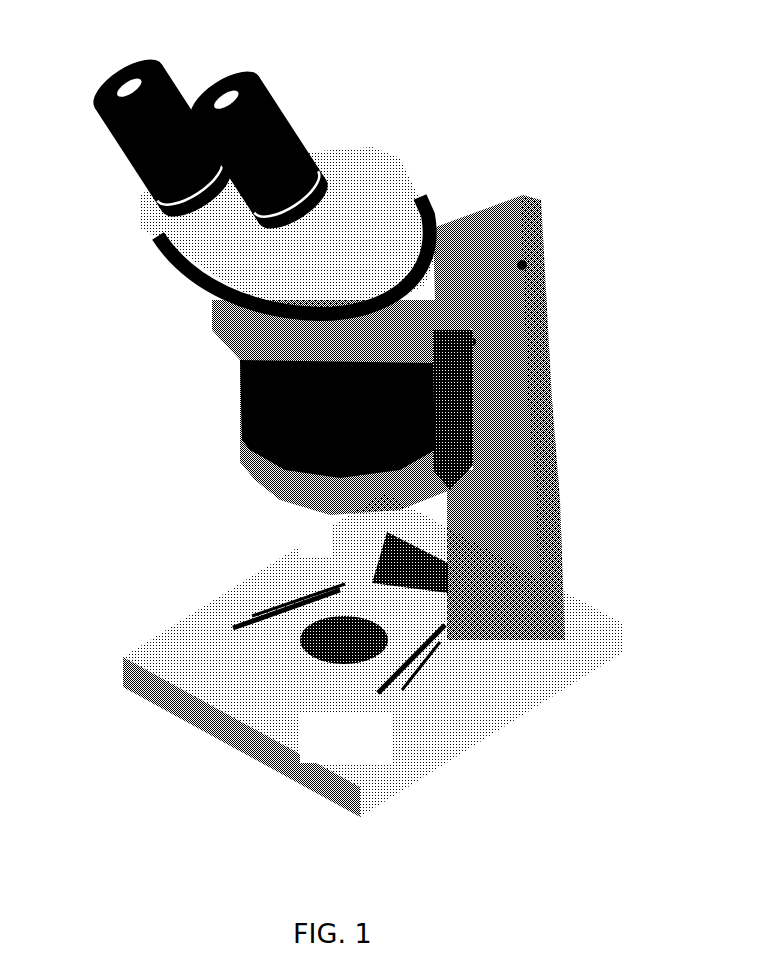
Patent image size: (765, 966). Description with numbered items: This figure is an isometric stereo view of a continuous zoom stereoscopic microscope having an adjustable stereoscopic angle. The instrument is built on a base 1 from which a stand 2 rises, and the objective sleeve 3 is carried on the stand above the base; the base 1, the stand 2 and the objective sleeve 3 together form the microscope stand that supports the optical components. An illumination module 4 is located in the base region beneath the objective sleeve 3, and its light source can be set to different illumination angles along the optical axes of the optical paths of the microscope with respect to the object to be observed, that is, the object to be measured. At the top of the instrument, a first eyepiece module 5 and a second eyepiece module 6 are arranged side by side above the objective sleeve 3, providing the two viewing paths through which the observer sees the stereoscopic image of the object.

The base 1 is at (543, 635).
The stand 2 is at (530, 345).
The objective sleeve 3 is at (265, 410).
The illumination module 4 is at (305, 660).
The first eyepiece module 5 is at (100, 62).
The second eyepiece module 6 is at (255, 80).